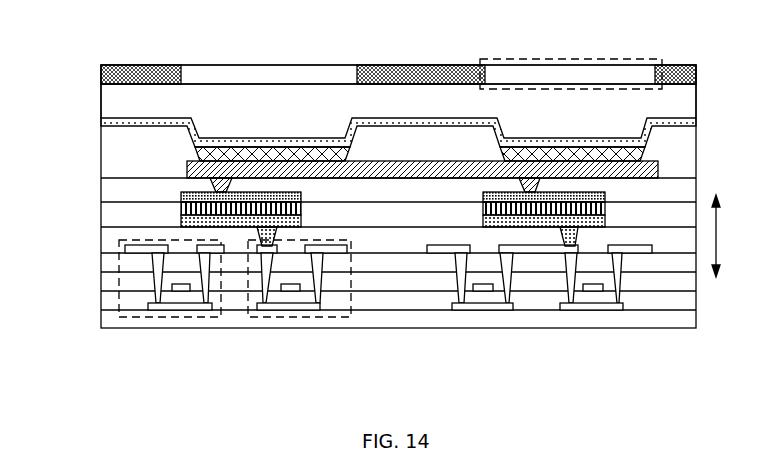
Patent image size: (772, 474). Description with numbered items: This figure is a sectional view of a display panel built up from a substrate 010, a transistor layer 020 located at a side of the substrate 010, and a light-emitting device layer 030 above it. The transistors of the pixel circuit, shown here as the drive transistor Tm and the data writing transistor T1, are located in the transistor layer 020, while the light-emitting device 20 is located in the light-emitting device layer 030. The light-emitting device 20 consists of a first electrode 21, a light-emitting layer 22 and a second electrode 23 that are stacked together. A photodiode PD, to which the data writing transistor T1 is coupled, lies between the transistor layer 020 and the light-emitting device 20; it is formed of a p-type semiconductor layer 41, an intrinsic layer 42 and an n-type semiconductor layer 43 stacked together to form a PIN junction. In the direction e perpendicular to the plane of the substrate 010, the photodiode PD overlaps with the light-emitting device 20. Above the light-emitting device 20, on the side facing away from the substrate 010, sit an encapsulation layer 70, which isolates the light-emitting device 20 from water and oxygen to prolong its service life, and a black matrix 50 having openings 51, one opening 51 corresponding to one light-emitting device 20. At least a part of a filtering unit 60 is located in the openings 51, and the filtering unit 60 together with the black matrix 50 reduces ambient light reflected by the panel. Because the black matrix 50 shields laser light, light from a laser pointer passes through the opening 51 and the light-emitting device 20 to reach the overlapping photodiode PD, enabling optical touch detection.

The substrate 010 is at (403, 313).
The transistor layer 020 is at (371, 301).
The light-emitting device layer 030 is at (409, 155).
The light-emitting device 20 is at (435, 155).
The first electrode 21 is at (658, 172).
The light-emitting layer 22 is at (648, 154).
The second electrode 23 is at (632, 144).
The photodiode PD is at (312, 215).
The p-type semiconductor layer 41 is at (200, 197).
The intrinsic layer 42 is at (200, 206).
The n-type semiconductor layer 43 is at (200, 217).
The drive transistor Tm is at (167, 318).
The data writing transistor T1 is at (293, 318).
The black matrix 50 is at (422, 65).
The opening 51 is at (540, 57).
The filtering unit 60 is at (320, 78).
The encapsulation layer 70 is at (235, 110).
The direction perpendicular to the plane of the substrate e is at (722, 236).